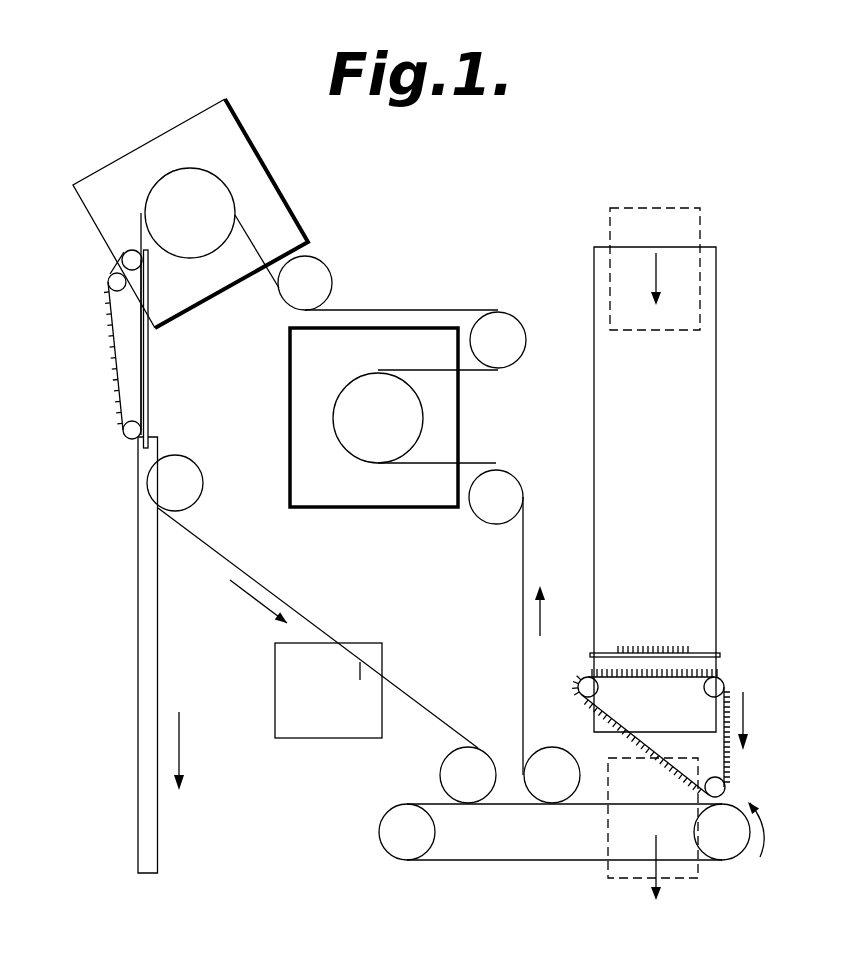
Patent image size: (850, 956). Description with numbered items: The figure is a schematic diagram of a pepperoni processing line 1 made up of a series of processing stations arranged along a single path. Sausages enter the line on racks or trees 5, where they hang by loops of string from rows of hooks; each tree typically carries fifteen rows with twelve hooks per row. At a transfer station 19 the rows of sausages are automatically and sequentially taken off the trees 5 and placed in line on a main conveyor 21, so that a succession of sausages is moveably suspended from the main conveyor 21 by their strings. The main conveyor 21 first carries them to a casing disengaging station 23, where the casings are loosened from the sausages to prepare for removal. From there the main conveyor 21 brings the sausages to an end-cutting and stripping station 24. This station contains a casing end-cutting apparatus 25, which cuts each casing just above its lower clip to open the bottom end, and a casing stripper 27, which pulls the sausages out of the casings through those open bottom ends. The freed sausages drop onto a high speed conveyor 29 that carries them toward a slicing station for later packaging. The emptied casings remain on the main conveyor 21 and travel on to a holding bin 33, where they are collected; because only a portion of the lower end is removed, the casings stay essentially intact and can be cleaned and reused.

The pepperoni processing line 1 is at (578, 135).
The trees 5 is at (643, 207).
The transfer station 19 is at (735, 670).
The main conveyor 21 is at (523, 600).
The casing disengaging station 23 is at (458, 413).
The end-cutting and stripping station 24 is at (88, 265).
The casing end-cutting apparatus 25 is at (268, 160).
The casing stripper 27 is at (148, 356).
The high speed conveyor 29 is at (122, 530).
The holding bin 33 is at (275, 688).